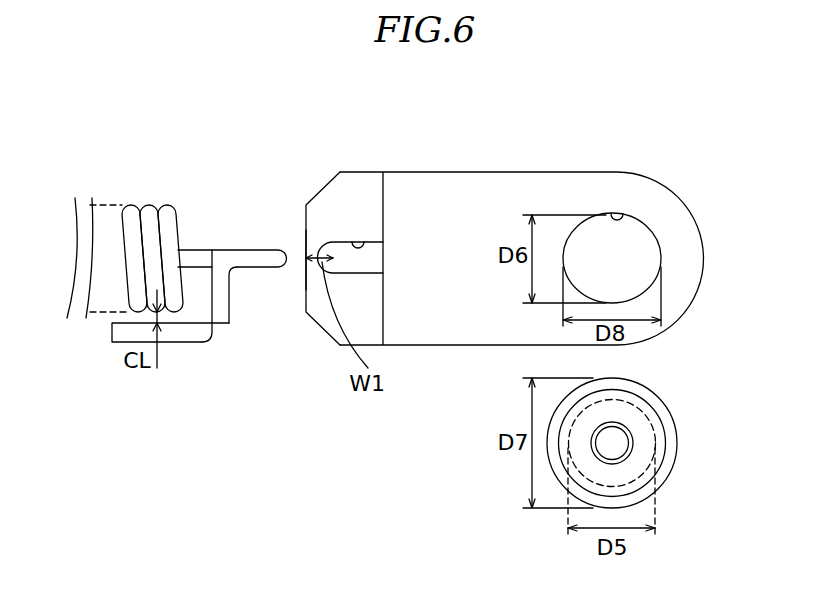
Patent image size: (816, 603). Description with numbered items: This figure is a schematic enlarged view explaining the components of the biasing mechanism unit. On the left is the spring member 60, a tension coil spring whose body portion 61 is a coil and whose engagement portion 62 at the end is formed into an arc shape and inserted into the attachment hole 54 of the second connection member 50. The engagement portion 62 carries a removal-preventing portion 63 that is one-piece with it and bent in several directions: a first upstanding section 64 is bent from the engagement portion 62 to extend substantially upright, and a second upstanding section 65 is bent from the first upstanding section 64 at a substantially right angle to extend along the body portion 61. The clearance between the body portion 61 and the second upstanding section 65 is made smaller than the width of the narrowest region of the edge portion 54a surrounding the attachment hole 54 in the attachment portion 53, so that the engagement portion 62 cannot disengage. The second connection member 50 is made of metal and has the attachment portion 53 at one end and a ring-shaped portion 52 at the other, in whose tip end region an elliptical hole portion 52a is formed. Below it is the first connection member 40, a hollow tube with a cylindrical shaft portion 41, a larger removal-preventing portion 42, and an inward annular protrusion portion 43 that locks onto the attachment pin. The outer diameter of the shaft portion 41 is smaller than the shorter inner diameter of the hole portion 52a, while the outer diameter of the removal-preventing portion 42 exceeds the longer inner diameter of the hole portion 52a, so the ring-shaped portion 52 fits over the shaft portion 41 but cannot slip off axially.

The first connection member 40 is at (646, 445).
The shaft portion 41 is at (647, 420).
The removal-preventing portion 42 is at (677, 443).
The protrusion portion 43 is at (617, 422).
The second connection member 50 is at (479, 215).
The ring-shaped portion 52 is at (483, 178).
The hole portion 52a is at (623, 216).
The attachment portion 53 is at (322, 188).
The attachment hole 54 is at (359, 246).
The edge portion 54a is at (320, 245).
The spring member 60 is at (197, 263).
The body portion 61 is at (131, 207).
The engagement portion 62 is at (252, 238).
The removal-preventing portion 63 is at (210, 299).
The first upstanding section 64 is at (223, 295).
The second upstanding section 65 is at (174, 359).